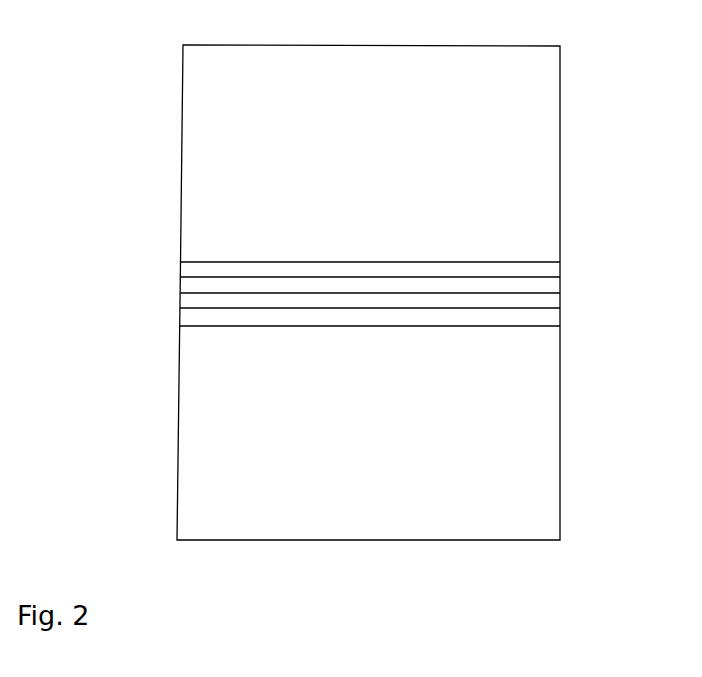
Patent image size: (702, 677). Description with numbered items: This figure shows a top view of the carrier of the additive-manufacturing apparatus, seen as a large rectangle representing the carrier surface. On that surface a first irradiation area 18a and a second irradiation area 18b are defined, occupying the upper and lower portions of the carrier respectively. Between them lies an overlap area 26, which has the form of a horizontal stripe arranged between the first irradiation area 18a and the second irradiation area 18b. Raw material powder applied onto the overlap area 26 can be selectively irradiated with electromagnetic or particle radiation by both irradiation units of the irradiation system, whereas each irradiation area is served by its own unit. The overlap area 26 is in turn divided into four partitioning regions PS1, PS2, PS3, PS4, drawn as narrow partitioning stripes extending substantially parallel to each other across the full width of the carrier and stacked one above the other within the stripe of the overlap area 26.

The first irradiation area 18a is at (540, 150).
The second irradiation area 18b is at (548, 417).
The overlap area 26 is at (427, 300).
The first partitioning region PS1 is at (278, 317).
The second partitioning region PS2 is at (418, 302).
The third partitioning region PS3 is at (318, 287).
The fourth partitioning region PS4 is at (267, 267).